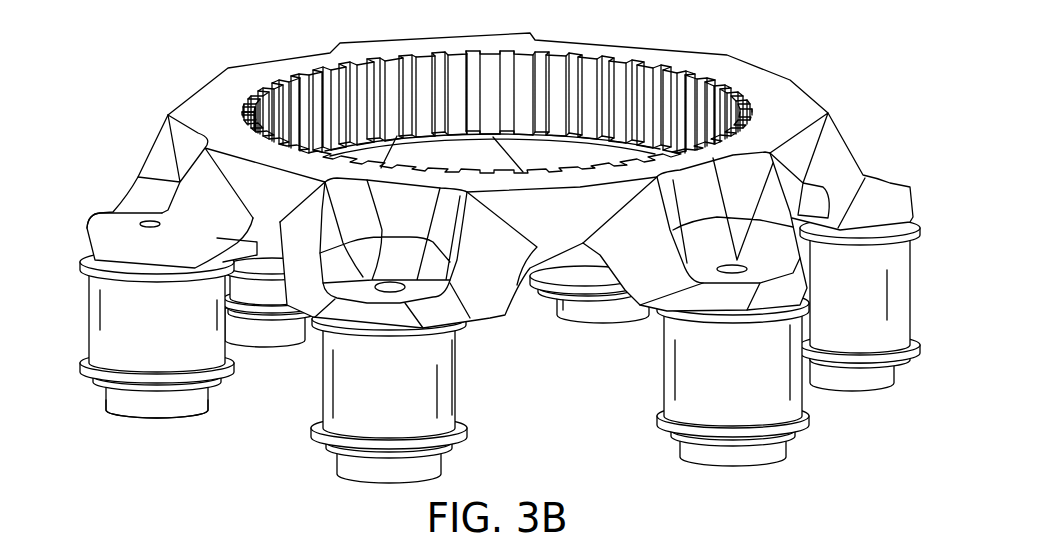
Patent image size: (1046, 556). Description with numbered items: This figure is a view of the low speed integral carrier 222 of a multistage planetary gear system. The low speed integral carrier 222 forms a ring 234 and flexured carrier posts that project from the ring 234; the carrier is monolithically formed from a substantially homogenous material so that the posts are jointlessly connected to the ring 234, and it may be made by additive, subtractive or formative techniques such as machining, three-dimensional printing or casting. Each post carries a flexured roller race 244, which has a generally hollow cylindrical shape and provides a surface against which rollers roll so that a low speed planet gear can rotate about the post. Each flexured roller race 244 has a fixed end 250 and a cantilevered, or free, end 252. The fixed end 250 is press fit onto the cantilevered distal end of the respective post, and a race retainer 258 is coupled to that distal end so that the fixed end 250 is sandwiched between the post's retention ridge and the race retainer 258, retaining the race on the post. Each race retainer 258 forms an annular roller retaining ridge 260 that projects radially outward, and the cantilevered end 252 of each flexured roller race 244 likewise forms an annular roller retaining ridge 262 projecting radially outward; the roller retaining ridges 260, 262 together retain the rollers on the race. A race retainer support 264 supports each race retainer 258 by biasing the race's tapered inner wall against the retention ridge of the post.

The low speed integral carrier 222 is at (213, 93).
The ring 234 is at (733, 57).
The flexured roller race 244 is at (90, 320).
The fixed end 250 is at (100, 367).
The cantilevered end 252 is at (125, 225).
The race retainer 258 is at (184, 425).
The annular roller retaining ridge 260 is at (233, 370).
The annular roller retaining ridge 262 is at (80, 260).
The race retainer support 264 is at (197, 410).